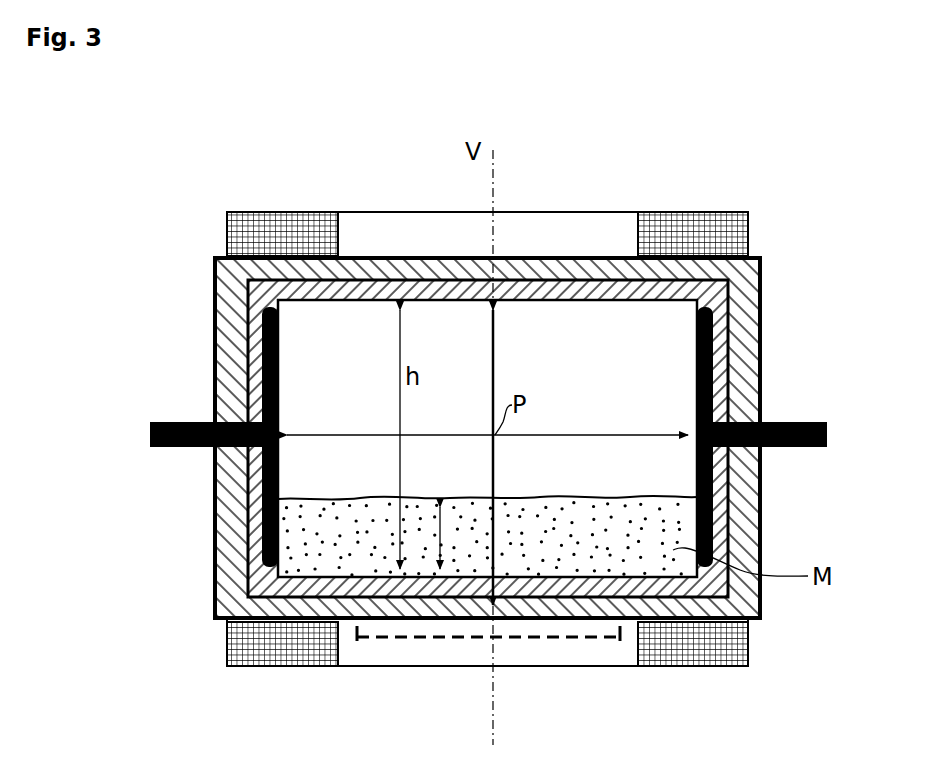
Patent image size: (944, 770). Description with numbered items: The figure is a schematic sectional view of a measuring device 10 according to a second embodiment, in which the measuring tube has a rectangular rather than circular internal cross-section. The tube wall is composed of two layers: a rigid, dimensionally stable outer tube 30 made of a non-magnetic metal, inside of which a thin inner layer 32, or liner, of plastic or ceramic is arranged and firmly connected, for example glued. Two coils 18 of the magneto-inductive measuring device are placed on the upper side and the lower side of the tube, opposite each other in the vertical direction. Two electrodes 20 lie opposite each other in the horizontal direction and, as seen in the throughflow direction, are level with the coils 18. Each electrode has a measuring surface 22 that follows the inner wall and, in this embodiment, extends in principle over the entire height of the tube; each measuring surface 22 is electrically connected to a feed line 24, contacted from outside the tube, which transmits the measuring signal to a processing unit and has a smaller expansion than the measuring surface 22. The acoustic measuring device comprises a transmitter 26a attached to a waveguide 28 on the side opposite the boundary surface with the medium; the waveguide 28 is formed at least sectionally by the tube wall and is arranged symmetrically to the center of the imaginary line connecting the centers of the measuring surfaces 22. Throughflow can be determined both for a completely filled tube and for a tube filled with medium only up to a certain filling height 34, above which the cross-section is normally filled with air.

The measuring device 10 is at (107, 233).
The coils 18 is at (277, 236).
The electrodes 20 is at (175, 389).
The measuring surface 22 is at (279, 336).
The feed line 24 is at (186, 447).
The transmitter 26a is at (586, 635).
The waveguide 28 is at (562, 616).
The outer tube 30 is at (548, 266).
The inner layer 32 is at (590, 287).
The filling height 34 is at (444, 533).